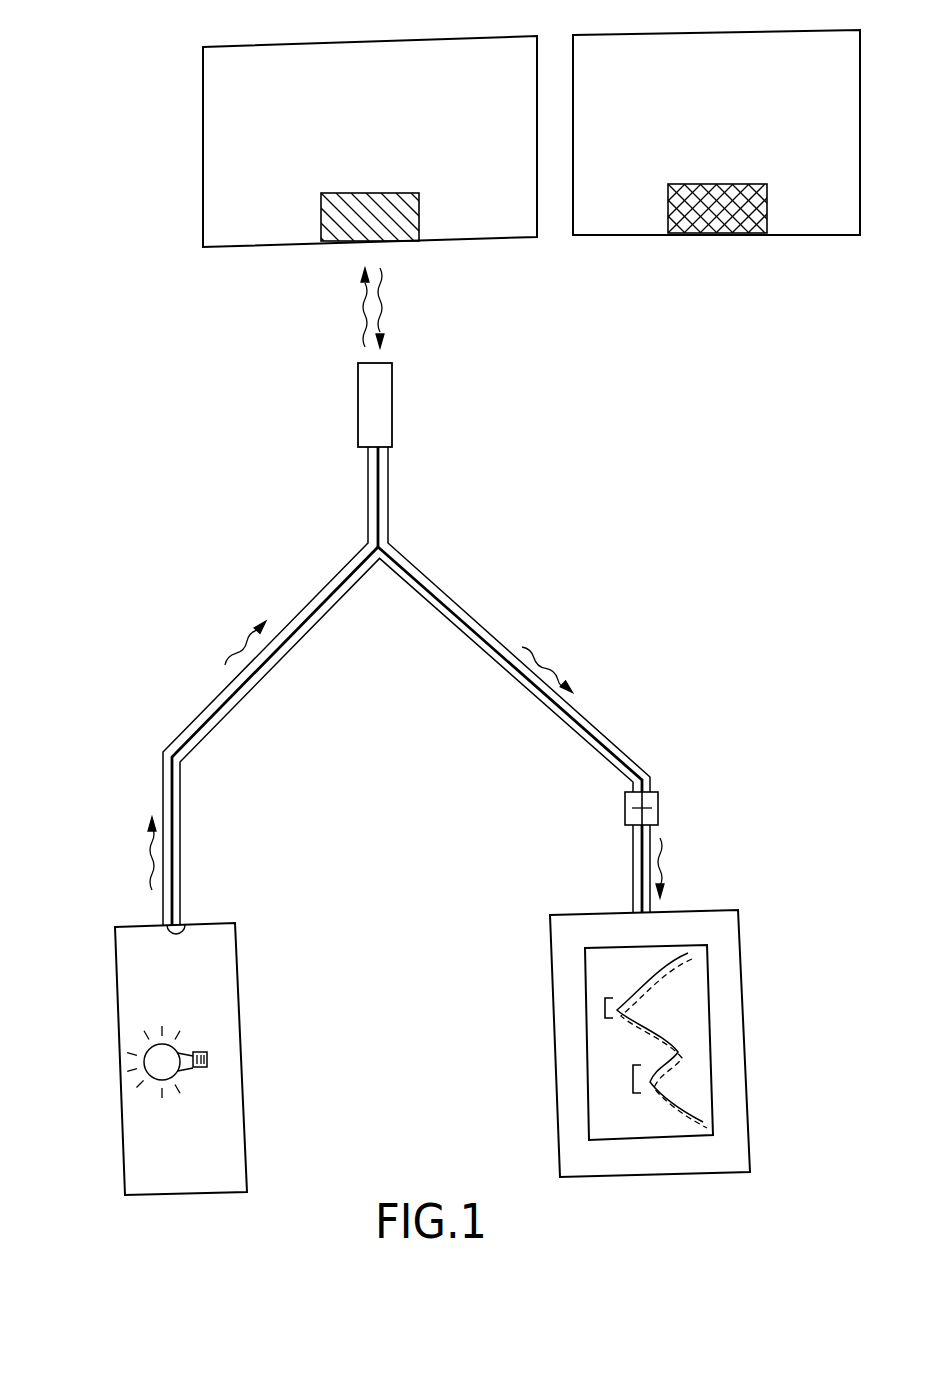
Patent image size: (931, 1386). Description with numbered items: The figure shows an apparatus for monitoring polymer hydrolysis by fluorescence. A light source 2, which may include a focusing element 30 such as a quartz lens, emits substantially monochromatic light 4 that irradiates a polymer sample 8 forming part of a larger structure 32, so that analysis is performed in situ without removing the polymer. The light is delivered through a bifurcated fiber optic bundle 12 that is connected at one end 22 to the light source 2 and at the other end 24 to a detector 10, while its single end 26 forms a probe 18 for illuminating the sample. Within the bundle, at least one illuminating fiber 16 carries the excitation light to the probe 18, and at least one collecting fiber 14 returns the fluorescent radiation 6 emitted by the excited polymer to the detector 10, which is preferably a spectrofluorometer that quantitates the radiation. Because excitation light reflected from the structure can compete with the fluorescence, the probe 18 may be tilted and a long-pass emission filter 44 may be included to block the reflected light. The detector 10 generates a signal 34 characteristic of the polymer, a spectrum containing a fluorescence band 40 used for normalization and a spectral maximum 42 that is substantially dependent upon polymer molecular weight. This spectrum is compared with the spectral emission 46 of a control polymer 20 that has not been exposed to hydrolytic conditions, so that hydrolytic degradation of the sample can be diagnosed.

The light source 2 is at (118, 1055).
The light 4 is at (145, 847).
The fluorescent radiation 6 is at (572, 637).
The polymer sample 8 is at (278, 306).
The detector 10 is at (785, 1022).
The fiber optic bundle 12 is at (427, 593).
The collecting fiber 14 is at (378, 480).
The illuminating fiber 16 is at (430, 522).
The probe 18 is at (413, 407).
The control polymer 20 is at (778, 290).
The end of fiber optic bundle 22 is at (162, 927).
The other end of fiber optic bundle 24 is at (630, 905).
The single end of bifurcated fiber optic bundle 26 is at (427, 470).
The focusing element 30 is at (80, 965).
The larger structure 32 is at (243, 165).
The signal 34 is at (635, 1032).
The fluorescence band 40 is at (603, 1007).
The spectral maximum 42 is at (633, 1080).
The long-pass emission filter 44 is at (658, 798).
The spectral emission 46 is at (788, 1083).